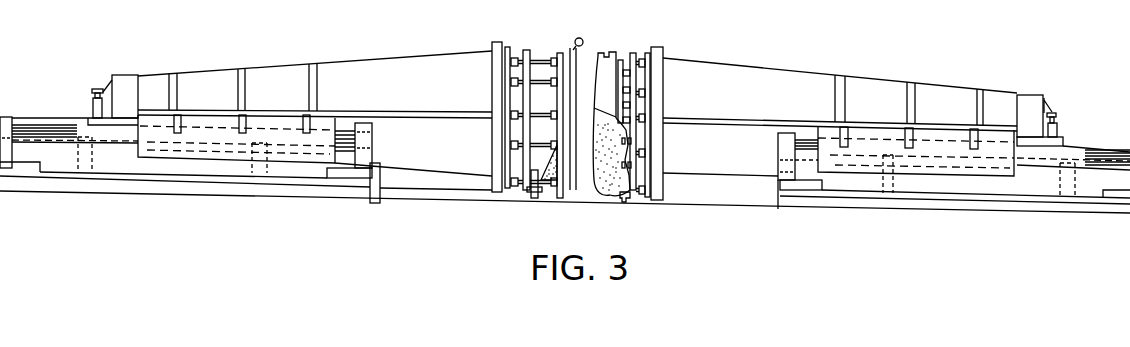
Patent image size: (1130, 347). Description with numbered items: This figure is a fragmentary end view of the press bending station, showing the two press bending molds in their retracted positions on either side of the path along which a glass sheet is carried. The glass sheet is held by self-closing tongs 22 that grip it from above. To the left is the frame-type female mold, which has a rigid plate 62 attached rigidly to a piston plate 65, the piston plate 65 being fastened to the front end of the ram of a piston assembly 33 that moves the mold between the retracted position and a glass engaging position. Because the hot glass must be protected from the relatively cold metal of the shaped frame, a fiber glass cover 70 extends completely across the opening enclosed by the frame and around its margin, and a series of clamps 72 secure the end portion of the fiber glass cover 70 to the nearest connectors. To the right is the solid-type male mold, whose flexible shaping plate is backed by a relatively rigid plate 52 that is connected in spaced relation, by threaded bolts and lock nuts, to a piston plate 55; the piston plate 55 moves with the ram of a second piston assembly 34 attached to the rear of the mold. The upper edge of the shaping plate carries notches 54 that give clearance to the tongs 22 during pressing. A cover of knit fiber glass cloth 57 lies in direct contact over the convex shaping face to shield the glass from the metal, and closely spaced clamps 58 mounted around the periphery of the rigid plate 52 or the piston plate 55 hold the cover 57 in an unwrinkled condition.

The tongs 22 is at (571, 43).
The piston assembly 33 is at (284, 206).
The piston assembly 34 is at (885, 224).
The rigid plate 52 is at (636, 53).
The notches 54 is at (607, 56).
The piston plate 55 is at (662, 74).
The cover of knit fiber glass cloth 57 is at (602, 183).
The clamps 58 is at (624, 199).
The rigid plate 62 is at (527, 51).
The piston plate 65 is at (492, 80).
The fiber glass cover 70 is at (559, 198).
The clamps 72 is at (535, 198).